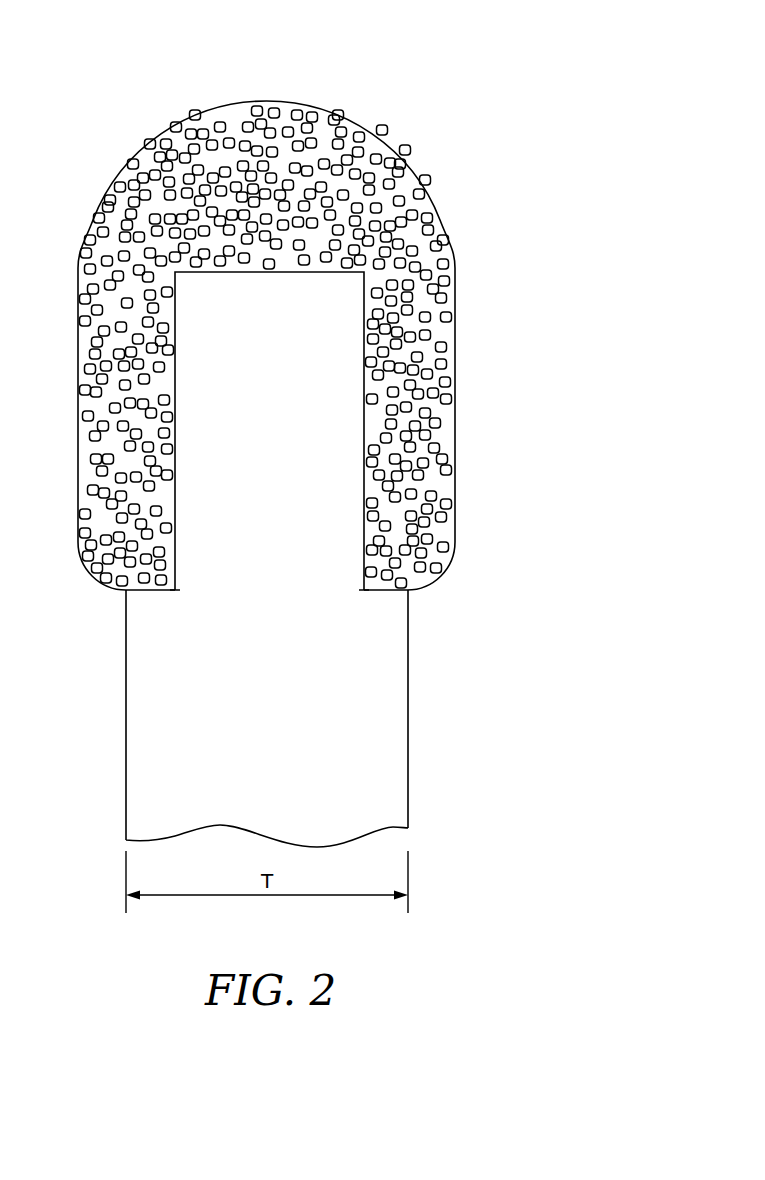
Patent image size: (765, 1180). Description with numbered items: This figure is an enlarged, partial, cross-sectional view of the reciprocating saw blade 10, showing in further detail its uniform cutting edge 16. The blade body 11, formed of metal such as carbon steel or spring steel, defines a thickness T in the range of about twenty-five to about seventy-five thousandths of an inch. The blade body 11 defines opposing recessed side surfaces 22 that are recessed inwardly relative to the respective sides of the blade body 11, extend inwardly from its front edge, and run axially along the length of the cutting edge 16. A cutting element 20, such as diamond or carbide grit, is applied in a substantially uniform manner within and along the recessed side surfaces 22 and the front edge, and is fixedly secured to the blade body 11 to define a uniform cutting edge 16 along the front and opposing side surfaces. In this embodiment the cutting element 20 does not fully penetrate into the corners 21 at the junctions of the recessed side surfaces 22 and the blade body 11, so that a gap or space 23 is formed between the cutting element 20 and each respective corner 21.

The reciprocating saw blade 10 is at (271, 72).
The blade body 11 is at (330, 809).
The cutting edge 16 is at (405, 119).
The cutting element 20 is at (100, 190).
The corners 21 is at (175, 592).
The recessed side surfaces 22 is at (175, 455).
The gap or space 23 is at (166, 581).